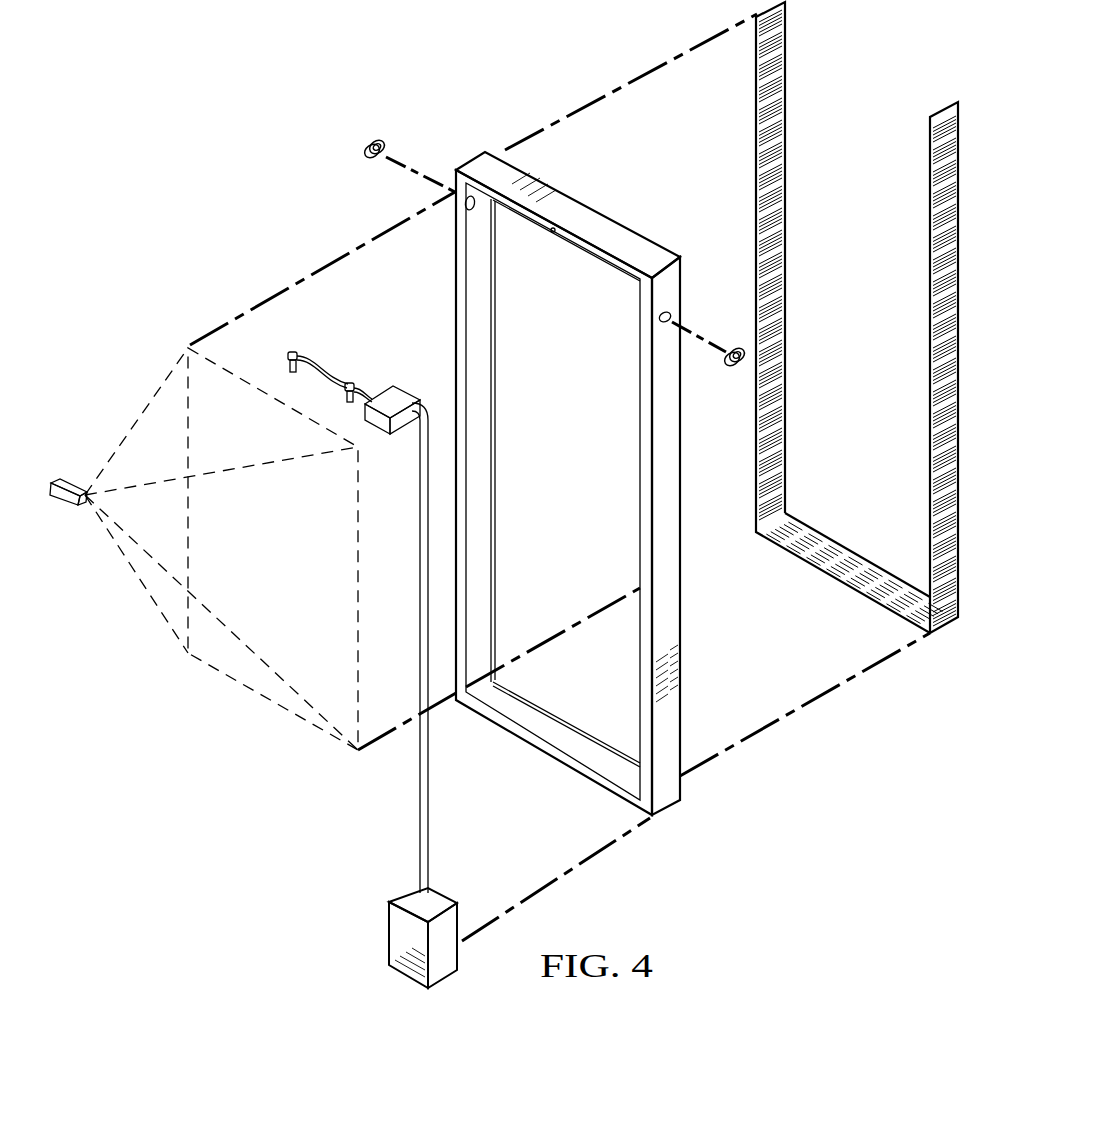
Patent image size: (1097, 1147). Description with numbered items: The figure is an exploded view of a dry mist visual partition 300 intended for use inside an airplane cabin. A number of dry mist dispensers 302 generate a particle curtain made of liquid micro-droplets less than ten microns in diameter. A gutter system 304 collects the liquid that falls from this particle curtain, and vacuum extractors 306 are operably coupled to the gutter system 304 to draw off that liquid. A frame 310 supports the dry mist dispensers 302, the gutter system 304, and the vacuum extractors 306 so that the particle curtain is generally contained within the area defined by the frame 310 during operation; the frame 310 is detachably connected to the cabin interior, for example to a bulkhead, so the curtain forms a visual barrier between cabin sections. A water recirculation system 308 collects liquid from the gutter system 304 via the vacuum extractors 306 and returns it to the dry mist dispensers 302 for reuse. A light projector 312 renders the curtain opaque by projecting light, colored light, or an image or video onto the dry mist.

The dry mist visual partition 300 is at (254, 120).
The dry mist dispensers 302 is at (293, 350).
The gutter system 304 is at (786, 156).
The vacuum extractors 306 is at (371, 139).
The water recirculation system 308 is at (389, 932).
The frame 310 is at (583, 204).
The light projector 312 is at (78, 506).